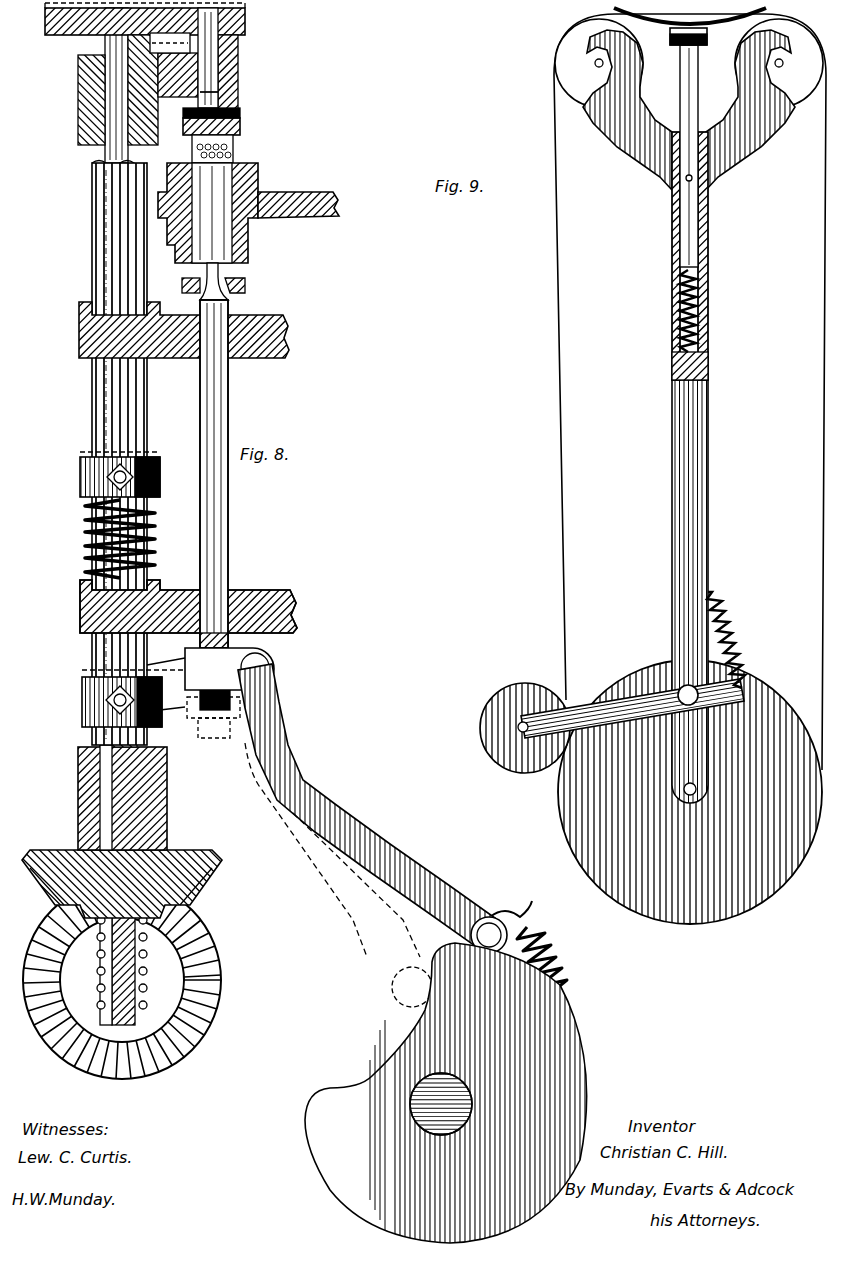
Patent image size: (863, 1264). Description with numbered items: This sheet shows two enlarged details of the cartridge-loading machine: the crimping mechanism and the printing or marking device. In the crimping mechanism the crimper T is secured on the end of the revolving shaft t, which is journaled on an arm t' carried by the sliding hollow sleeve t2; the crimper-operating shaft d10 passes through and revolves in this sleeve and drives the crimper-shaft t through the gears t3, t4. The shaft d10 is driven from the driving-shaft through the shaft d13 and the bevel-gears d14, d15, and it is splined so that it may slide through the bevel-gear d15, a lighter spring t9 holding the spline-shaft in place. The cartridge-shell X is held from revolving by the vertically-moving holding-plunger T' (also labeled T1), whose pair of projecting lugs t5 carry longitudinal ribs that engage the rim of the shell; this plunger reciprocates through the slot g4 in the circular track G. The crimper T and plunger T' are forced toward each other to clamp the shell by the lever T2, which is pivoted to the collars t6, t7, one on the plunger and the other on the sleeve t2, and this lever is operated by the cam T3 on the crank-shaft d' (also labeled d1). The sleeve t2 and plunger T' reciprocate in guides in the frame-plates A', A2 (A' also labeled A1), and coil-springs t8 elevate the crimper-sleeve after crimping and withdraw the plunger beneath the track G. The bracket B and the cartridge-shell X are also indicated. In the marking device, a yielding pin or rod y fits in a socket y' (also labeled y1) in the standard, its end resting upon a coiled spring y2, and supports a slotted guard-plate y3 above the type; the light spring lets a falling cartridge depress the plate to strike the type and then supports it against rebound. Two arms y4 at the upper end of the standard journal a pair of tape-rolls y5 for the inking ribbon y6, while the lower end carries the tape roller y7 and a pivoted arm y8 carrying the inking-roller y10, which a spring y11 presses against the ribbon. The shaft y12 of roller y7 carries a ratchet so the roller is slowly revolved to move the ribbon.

In FIG. 8, the gear t3 is at (65, 25).
In FIG. 8, the gear t4 is at (180, 25).
In FIG. 8, the revolving crimper-shaft t is at (231, 58).
In FIG. 8, the arm t' is at (240, 81).
In FIG. 8, the crimper T is at (431, 632).
In FIG. 8, the crimper-operating shaft d10 is at (120, 805).
In FIG. 8, the sliding hollow sleeve t2 is at (98, 228).
In FIG. 8, the bracket arm B is at (322, 190).
In FIG. 8, the cartridge-shell X is at (205, 238).
In FIG. 8, the projecting lugs t5 is at (215, 272).
In FIG. 8, the circular track G is at (240, 283).
In FIG. 8, the slot or opening g4 is at (245, 288).
In FIG. 8, the frame-plate A2 is at (292, 340).
In FIG. 8, the holding-plunger T' is at (431, 632).
In FIG. 8, the holding-plunger T1 is at (214, 474).
In FIG. 8, the coil-springs t8 is at (88, 562).
In FIG. 8, the frame-plate A' is at (431, 632).
In FIG. 8, the frame-plate A1 is at (188, 606).
In FIG. 8, the collar t6 is at (210, 693).
In FIG. 8, the collar t7 is at (100, 690).
In FIG. 8, the lever T2 is at (300, 733).
In FIG. 8, the bevel-gear d15 is at (192, 885).
In FIG. 8, the lighter spring t9 is at (100, 972).
In FIG. 8, the shaft d13 is at (145, 965).
In FIG. 8, the bevel-gear d14 is at (202, 1000).
In FIG. 8, the cam T3 is at (372, 1075).
In FIG. 8, the crank-shaft d' is at (431, 632).
In FIG. 8, the crank-shaft d1 is at (441, 1104).
In FIG. 9, the inking tape or ribbon y6 is at (565, 268).
In FIG. 9, the tape roller y7 is at (431, 632).
In FIG. 9, the inking-roller y10 is at (505, 762).
In FIG. 9, the pivoted arm or lever y8 is at (431, 632).
In FIG. 9, the shaft of roller y7 y12 is at (697, 788).
In FIG. 9, the spring y11 is at (735, 625).
In FIG. 9, the tape-rolls y5 is at (689, 63).
In FIG. 9, the arms y4 is at (625, 148).
In FIG. 9, the socket y' is at (431, 632).
In FIG. 9, the socket y1 is at (690, 256).
In FIG. 9, the coiled spring y2 is at (705, 325).
In FIG. 9, the yielding pin or rod y is at (694, 147).
In FIG. 9, the slotted guard-plate y3 is at (665, 33).